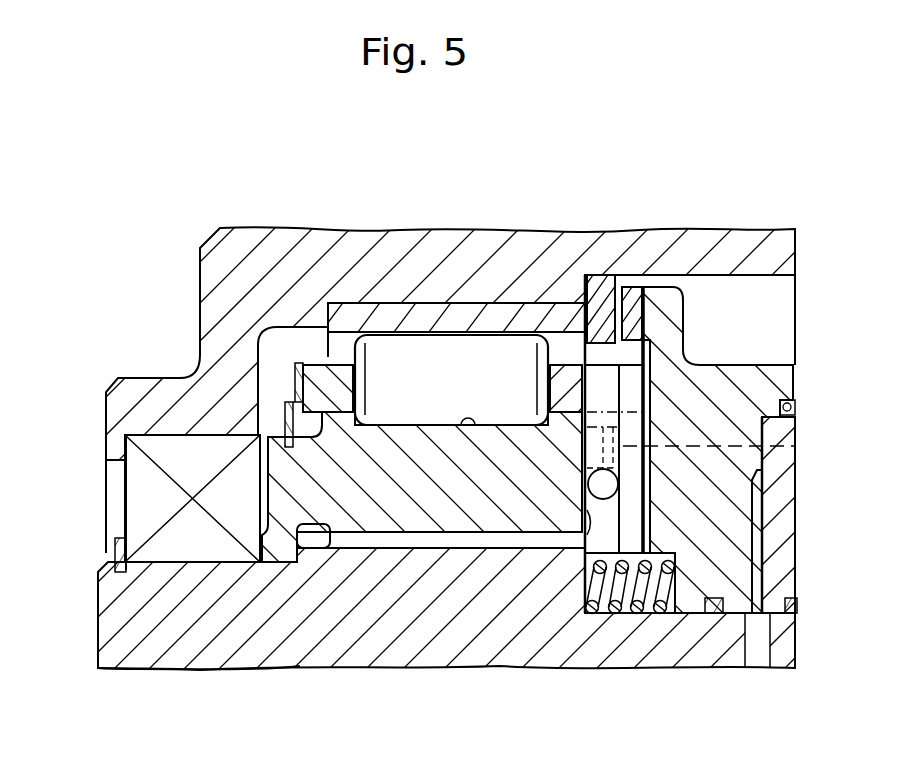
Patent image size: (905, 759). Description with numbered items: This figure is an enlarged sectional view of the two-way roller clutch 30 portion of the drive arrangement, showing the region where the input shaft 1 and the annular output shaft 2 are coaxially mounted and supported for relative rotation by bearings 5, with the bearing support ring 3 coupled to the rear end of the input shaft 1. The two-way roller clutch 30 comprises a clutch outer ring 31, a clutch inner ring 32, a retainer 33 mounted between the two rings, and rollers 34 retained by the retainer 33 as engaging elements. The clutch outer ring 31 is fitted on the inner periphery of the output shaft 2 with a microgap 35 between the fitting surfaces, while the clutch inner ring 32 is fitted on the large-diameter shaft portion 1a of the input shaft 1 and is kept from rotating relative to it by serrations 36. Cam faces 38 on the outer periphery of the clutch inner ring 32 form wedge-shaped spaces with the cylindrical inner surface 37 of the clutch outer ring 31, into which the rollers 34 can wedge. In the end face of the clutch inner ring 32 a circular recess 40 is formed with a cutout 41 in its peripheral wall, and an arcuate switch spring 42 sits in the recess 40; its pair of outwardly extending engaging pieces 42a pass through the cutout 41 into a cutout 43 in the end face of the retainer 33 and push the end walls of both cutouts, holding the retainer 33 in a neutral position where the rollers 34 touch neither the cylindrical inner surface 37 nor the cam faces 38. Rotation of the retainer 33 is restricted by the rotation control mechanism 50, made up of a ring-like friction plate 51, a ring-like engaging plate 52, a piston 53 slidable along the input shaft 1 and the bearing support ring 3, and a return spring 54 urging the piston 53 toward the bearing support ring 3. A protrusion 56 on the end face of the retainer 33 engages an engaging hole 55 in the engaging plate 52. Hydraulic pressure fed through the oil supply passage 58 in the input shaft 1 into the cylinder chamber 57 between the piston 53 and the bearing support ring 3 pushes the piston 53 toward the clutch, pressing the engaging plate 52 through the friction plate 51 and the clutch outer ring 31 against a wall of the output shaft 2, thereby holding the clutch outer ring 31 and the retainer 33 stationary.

The input shaft 1 is at (112, 620).
The large-diameter shaft portion 1a is at (280, 655).
The output shaft 2 is at (118, 410).
The bearing support ring 3 is at (783, 567).
The bearings 5 is at (135, 503).
The two-way roller clutch 30 is at (358, 296).
The clutch outer ring 31 is at (386, 318).
The clutch inner ring 32 is at (288, 468).
The retainer 33 is at (300, 365).
The rollers 34 is at (423, 353).
The microgap 35 is at (473, 340).
The serrations 36 is at (378, 540).
The cylindrical inner surface 37 is at (493, 348).
The cam faces 38 is at (468, 430).
The circular recess 40 is at (575, 580).
The cutout 41 is at (805, 448).
The switch spring 42 is at (608, 515).
The engaging pieces 42a is at (624, 392).
The cutout 43 is at (603, 388).
The rotation control mechanism 50 is at (668, 278).
The friction plate 51 is at (601, 298).
The engaging plate 52 is at (632, 290).
The piston 53 is at (692, 598).
The return spring 54 is at (612, 600).
The engaging hole 55 is at (642, 403).
The protrusion 56 is at (642, 386).
The cylinder chamber 57 is at (758, 533).
The oil supply passage 58 is at (757, 657).